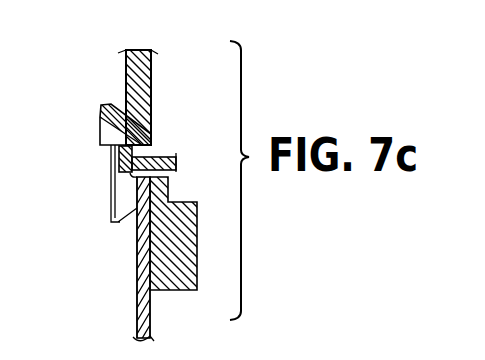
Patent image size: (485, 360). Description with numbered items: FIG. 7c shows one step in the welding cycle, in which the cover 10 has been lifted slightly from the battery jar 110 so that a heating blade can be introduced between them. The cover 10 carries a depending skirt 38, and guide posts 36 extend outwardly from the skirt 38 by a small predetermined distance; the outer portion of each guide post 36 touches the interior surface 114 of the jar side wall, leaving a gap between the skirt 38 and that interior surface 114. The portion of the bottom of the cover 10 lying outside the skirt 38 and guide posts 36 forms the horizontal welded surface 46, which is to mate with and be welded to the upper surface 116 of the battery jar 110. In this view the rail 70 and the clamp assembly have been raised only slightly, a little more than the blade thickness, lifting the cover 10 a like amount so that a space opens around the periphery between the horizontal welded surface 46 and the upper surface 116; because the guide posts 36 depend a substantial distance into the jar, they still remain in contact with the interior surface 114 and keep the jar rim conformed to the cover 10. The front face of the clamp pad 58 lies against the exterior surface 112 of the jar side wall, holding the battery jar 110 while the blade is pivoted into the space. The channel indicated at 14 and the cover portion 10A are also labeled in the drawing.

The cover 10 is at (90, 122).
The frame flange 10A is at (172, 158).
The channel 14 is at (166, 128).
The guide posts 36 is at (111, 205).
The skirt 38 is at (110, 163).
The horizontal welded surface 46 is at (147, 150).
The clamp pad 58 is at (200, 218).
The rail 70 is at (153, 52).
The battery jar 110 is at (136, 262).
The exterior surface 112 is at (152, 311).
The interior surface 114 is at (137, 313).
The upper surface 116 is at (137, 177).